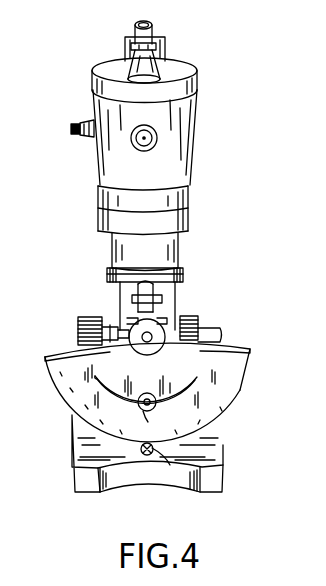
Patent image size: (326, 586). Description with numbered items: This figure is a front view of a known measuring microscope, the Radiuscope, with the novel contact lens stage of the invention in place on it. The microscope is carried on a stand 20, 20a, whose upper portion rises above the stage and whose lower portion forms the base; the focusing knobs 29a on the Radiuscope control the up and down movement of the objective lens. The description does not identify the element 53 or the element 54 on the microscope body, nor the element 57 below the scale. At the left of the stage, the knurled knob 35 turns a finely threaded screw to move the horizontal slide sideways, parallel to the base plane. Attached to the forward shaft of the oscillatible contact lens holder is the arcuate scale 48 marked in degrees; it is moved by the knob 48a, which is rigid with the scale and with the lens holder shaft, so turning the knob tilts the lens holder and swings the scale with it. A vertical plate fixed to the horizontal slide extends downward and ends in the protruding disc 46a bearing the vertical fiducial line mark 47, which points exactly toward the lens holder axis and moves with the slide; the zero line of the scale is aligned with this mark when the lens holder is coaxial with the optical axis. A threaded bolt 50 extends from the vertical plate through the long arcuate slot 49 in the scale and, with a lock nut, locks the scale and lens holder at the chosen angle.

The stand 20 is at (198, 149).
The push button switch 53 is at (154, 131).
The side knob 54 is at (70, 128).
The knob 48a is at (161, 319).
The focusing knobs 29a is at (195, 320).
The knurled knob 35 is at (80, 316).
The arcuate scale 48 is at (245, 360).
The arcuate slot 49 is at (228, 390).
The threaded bolt 50 is at (140, 395).
The stem 57 is at (148, 422).
The stand 20a is at (226, 447).
The vertical fiducial line mark 47 is at (144, 456).
The protruding disc 46a is at (170, 465).